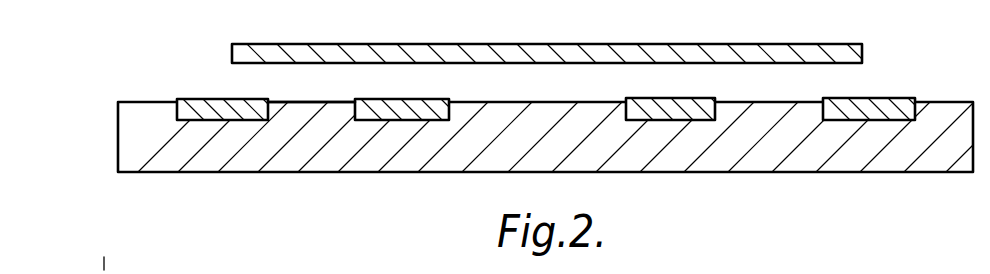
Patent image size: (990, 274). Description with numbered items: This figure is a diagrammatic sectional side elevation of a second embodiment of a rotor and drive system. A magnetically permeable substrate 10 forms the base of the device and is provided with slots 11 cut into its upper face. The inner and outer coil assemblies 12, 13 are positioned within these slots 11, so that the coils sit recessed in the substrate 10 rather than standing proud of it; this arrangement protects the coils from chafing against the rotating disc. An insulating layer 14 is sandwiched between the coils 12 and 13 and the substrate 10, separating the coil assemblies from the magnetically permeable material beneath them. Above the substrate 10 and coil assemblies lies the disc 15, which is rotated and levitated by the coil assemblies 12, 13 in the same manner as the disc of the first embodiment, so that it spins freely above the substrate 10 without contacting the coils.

The magnetically permeable substrate 10 is at (776, 147).
The slots 11 is at (629, 100).
The inner coil assembly 12 is at (432, 100).
The outer coil assembly 13 is at (228, 100).
The insulating layer 14 is at (396, 121).
The disc 15 is at (369, 44).